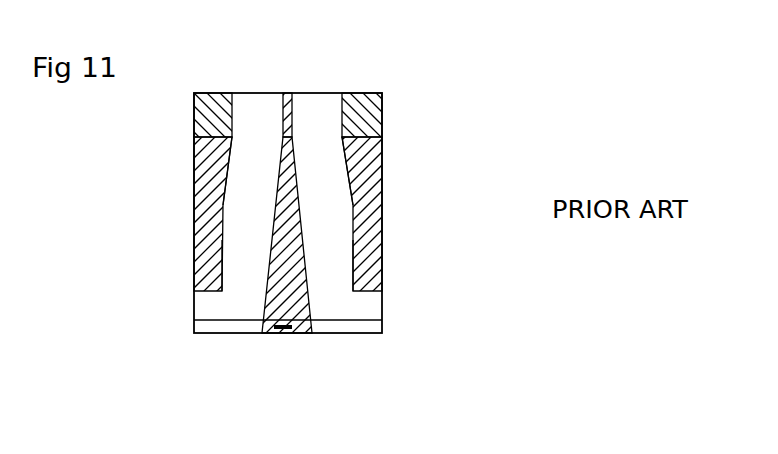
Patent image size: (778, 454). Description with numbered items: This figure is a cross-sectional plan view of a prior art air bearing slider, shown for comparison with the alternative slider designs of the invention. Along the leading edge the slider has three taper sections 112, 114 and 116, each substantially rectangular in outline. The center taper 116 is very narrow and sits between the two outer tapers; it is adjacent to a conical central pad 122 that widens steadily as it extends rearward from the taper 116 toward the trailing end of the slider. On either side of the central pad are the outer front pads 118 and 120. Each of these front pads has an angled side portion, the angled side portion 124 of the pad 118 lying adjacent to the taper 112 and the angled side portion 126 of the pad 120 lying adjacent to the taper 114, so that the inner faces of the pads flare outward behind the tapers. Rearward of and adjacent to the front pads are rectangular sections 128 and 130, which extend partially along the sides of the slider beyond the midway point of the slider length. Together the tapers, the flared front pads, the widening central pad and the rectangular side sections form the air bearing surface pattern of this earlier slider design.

The taper section 112 is at (318, 210).
The taper section 114 is at (318, 183).
The center taper 116 is at (324, 182).
The outer front pad 118 is at (324, 210).
The outer front pad 120 is at (324, 210).
The conical central pad 122 is at (324, 223).
The angled side portion 124 is at (151, 180).
The angled side portion 126 is at (420, 161).
The rectangular section 128 is at (146, 274).
The rectangular section 130 is at (428, 269).